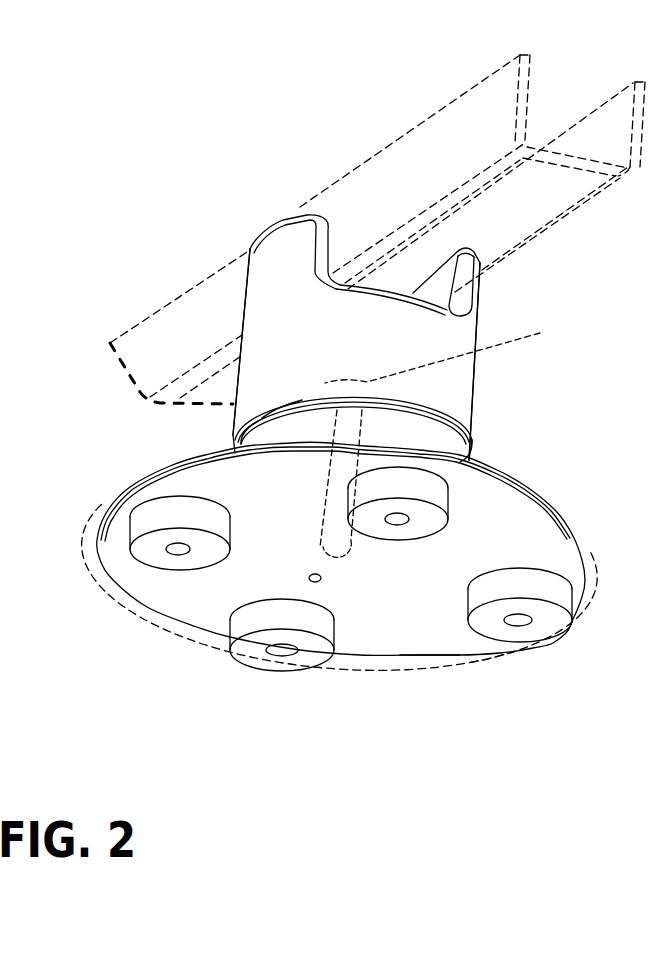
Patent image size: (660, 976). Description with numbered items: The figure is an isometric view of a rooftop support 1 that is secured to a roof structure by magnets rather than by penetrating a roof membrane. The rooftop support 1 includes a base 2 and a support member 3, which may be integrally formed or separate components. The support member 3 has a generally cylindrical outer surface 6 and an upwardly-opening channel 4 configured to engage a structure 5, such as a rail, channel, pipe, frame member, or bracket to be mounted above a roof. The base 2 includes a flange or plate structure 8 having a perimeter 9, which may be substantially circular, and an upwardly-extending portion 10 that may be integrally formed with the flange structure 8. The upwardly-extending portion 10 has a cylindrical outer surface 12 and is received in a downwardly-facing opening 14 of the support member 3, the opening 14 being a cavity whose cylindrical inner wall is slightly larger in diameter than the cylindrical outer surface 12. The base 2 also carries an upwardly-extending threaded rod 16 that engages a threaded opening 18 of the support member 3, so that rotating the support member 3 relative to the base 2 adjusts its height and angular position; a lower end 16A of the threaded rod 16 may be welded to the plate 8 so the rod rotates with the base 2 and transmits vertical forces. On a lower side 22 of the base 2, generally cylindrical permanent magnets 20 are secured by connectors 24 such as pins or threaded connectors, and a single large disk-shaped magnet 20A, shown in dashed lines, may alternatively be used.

The rooftop support 1 is at (512, 298).
The base 2 is at (557, 508).
The support member 3 is at (480, 388).
The channel 4 is at (366, 254).
The structure 5 is at (450, 121).
The outer surface 6 is at (280, 327).
The flange or plate structure 8 is at (523, 547).
The perimeter 9 is at (593, 570).
The upwardly-extending portion 10 is at (285, 422).
The cylindrical outer surface 12 is at (260, 436).
The downwardly-facing opening 14 is at (473, 450).
The threaded rod 16 is at (357, 550).
The lower end 16A is at (340, 567).
The threaded opening 18 is at (402, 390).
The magnets 20 is at (427, 517).
The single large magnet 20A is at (497, 665).
The lower side 22 is at (442, 632).
The connectors 24 is at (403, 520).